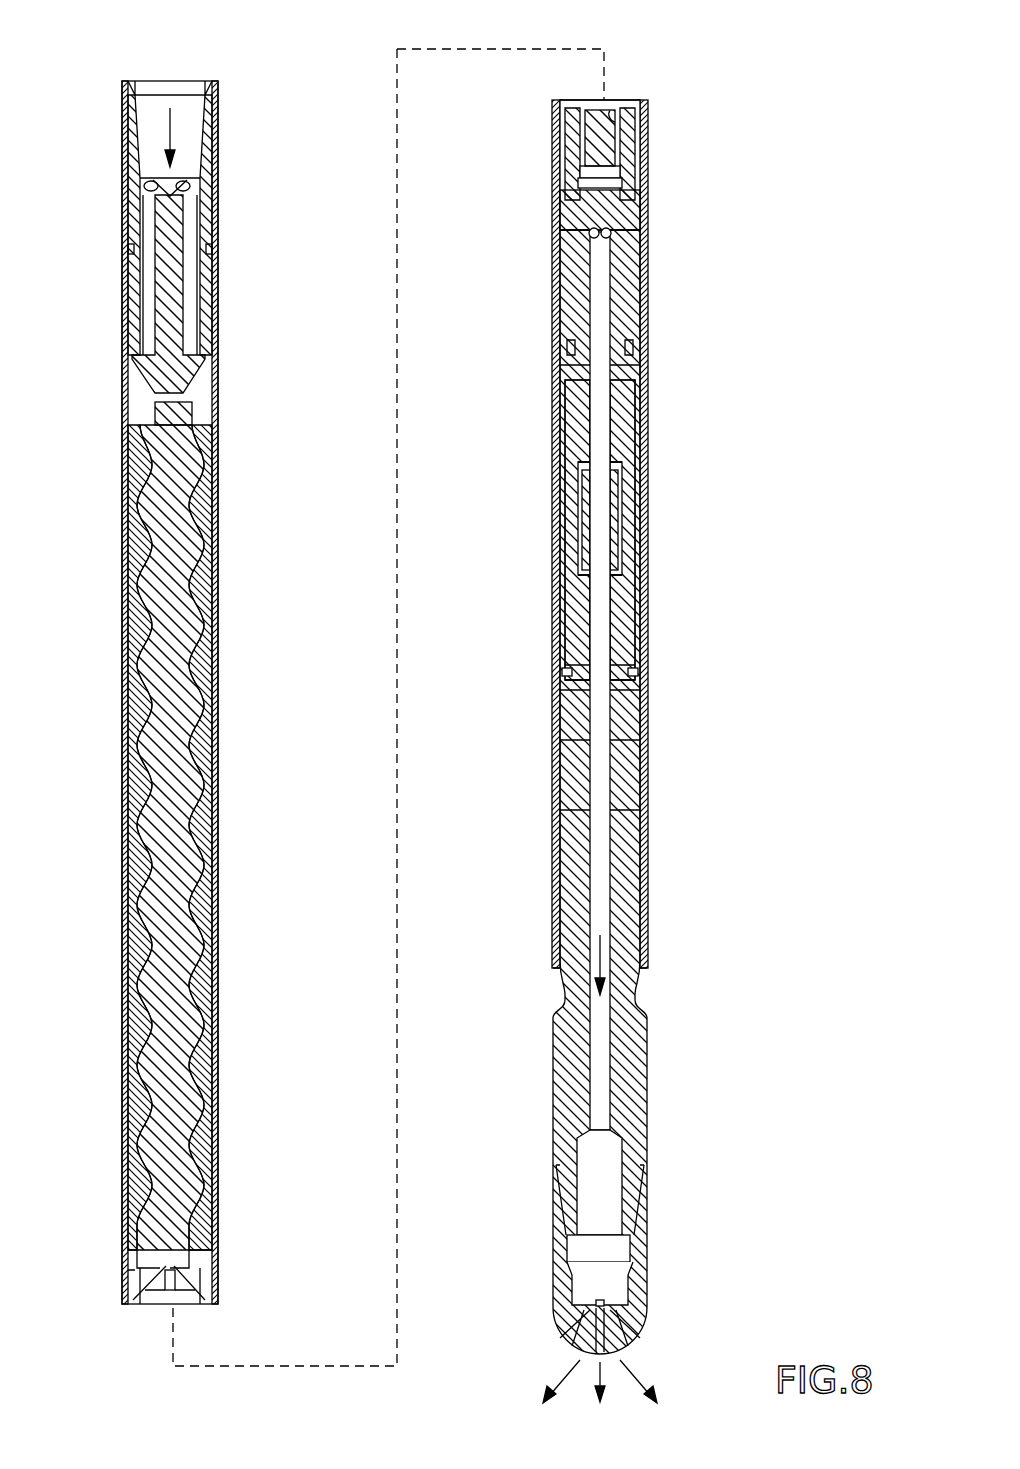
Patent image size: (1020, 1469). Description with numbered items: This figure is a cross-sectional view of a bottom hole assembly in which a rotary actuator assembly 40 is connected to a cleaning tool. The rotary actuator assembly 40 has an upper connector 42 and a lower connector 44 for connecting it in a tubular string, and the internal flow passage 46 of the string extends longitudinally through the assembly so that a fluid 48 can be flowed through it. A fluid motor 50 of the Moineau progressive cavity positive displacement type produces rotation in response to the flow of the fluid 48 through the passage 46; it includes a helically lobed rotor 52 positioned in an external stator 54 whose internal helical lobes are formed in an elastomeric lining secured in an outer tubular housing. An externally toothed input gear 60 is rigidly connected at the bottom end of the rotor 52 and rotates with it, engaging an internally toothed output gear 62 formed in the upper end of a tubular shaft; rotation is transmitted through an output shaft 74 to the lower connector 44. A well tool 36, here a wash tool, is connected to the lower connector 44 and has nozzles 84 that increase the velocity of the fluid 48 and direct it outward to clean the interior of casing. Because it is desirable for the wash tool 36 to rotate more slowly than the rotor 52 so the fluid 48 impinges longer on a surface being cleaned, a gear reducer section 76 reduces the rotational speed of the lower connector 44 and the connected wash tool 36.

The well tool 36 is at (648, 1218).
The rotary actuator assembly 40 is at (112, 389).
The upper connector 42 is at (126, 135).
The lower connector 44 is at (648, 1062).
The internal flow passage 46 is at (600, 603).
The fluid 48 is at (160, 118).
The fluid motor 50 is at (125, 853).
The rotor 52 is at (140, 930).
The stator 54 is at (122, 980).
The input gear 60 is at (640, 135).
The output gear 62 is at (608, 97).
The output shaft 74 is at (640, 755).
The gear reducer section 76 is at (656, 155).
The nozzles 84 is at (640, 1305).